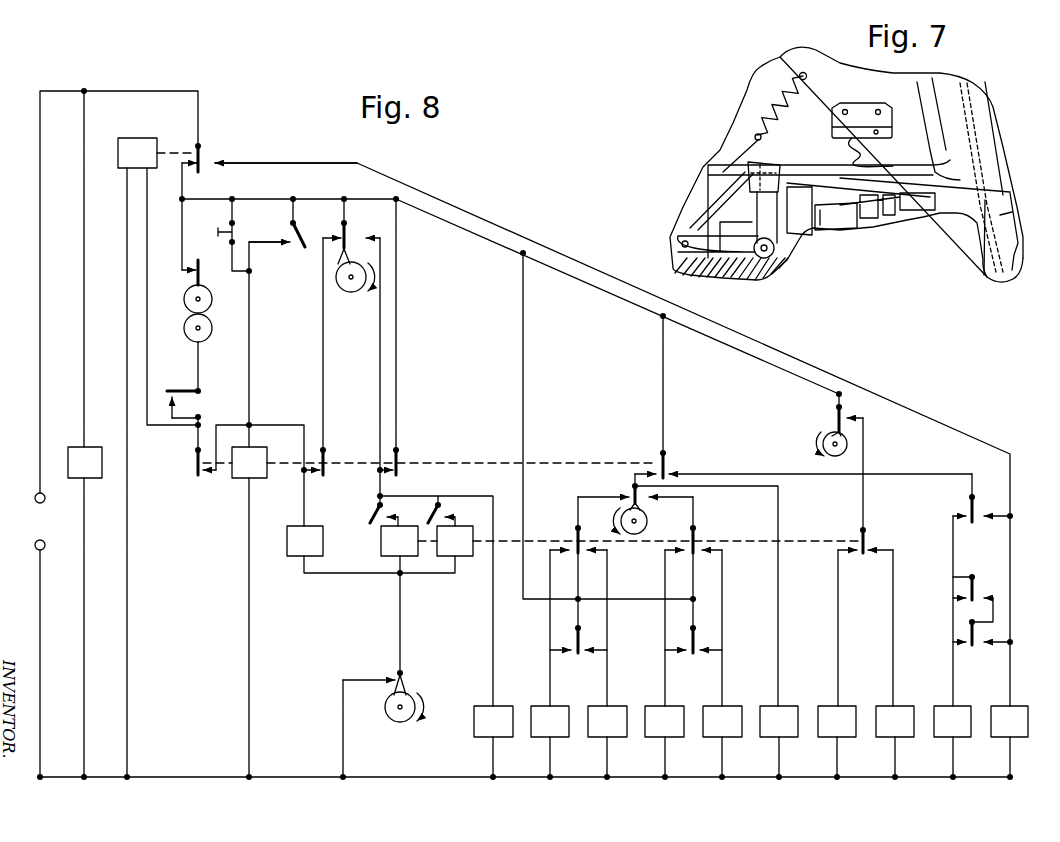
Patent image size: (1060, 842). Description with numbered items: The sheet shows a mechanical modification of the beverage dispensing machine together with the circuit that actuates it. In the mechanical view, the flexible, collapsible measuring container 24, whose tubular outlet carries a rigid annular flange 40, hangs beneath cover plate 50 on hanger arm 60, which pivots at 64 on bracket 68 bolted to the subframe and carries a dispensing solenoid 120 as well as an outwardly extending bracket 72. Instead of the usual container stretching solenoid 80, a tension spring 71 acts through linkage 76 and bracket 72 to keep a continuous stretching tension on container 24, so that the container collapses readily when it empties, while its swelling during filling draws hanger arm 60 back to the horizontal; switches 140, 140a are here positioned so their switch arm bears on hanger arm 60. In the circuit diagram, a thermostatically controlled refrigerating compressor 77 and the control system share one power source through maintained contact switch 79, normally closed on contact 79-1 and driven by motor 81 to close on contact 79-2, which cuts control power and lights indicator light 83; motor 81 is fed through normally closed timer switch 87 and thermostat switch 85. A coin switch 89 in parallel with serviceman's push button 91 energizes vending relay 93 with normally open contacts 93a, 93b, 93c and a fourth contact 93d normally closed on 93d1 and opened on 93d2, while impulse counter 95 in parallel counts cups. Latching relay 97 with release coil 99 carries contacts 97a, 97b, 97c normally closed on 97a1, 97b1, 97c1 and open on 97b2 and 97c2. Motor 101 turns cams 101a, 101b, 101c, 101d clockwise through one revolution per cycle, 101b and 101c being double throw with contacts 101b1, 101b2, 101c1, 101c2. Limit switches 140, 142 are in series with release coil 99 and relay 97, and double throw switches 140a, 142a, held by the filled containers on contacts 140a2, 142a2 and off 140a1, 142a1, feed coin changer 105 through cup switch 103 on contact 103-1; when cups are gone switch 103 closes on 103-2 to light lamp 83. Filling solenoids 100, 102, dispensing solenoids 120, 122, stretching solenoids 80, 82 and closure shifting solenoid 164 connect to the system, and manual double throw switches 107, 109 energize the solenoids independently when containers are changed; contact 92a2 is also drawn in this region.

In FIG. 7, the flexible, collapsible measuring container 24 is at (983, 157).
In FIG. 7, the annular flange 40 is at (1003, 283).
In FIG. 7, the cover plate 50 is at (1010, 236).
In FIG. 7, the hanger arm 60 is at (907, 185).
In FIG. 7, the pivot 64 is at (775, 251).
In FIG. 7, the bracket 68 is at (769, 166).
In FIG. 7, the tension spring 71 is at (778, 97).
In FIG. 7, the bracket 72 is at (720, 256).
In FIG. 7, the linkage 76 is at (690, 223).
In FIG. 8, the refrigerating compressor 77 is at (85, 462).
In FIG. 8, the maintained contact switch 79 is at (203, 153).
In FIG. 8, the contact 79-1 is at (184, 167).
In FIG. 8, the contact 79-2 is at (226, 161).
In FIG. 8, the container stretching solenoid 80 is at (837, 741).
In FIG. 8, the motor 81 is at (137, 153).
In FIG. 8, the container stretching solenoid 82 is at (895, 741).
In FIG. 8, the indicator light 83 is at (1009, 741).
In FIG. 8, the thermostat switch 85 is at (194, 277).
In FIG. 8, the timer switch 87 is at (195, 400).
In FIG. 8, the coin switch 89 is at (299, 235).
In FIG. 8, the push button 91 is at (218, 230).
In FIG. 8, the vending relay 93 is at (249, 462).
In FIG. 8, the relay contact 93a is at (198, 451).
In FIG. 8, the relay contact 93b is at (325, 449).
In FIG. 8, the relay contact 93c is at (398, 449).
In FIG. 8, the relay contact 93d is at (666, 451).
In FIG. 8, the contact 93d1 is at (674, 472).
In FIG. 8, the contact 93d2 is at (639, 468).
In FIG. 8, the impulse counter 95 is at (305, 541).
In FIG. 8, the latching relay 97 is at (455, 541).
In FIG. 8, the relay contact 97a is at (576, 526).
In FIG. 8, the contact 97a1 is at (592, 553).
In FIG. 8, the relay contact 97b is at (697, 529).
In FIG. 8, the contact 97b1 is at (709, 549).
In FIG. 8, the contact 97b2 is at (669, 553).
In FIG. 8, the relay contact 97c is at (867, 528).
In FIG. 8, the contact 97c1 is at (872, 551).
In FIG. 8, the contact 97c2 is at (841, 554).
In FIG. 8, the release coil 99 is at (399, 541).
In FIG. 8, the contact actuator 92a2 is at (555, 548).
In FIG. 8, the filling solenoid 100 is at (550, 741).
In FIG. 8, the motor 101 is at (493, 741).
In FIG. 8, the cam 101a is at (395, 711).
In FIG. 8, the cam 101b is at (641, 527).
In FIG. 8, the contact 101b1 is at (625, 495).
In FIG. 8, the contact 101b2 is at (665, 498).
In FIG. 8, the cam 101c is at (351, 287).
In FIG. 8, the contact 101c1 is at (322, 325).
In FIG. 8, the contact 101c2 is at (369, 232).
In FIG. 8, the cam 101d is at (826, 442).
In FIG. 8, the filling solenoid 102 is at (607, 741).
In FIG. 8, the empty cup switch 103 is at (974, 496).
In FIG. 8, the contact 103-1 is at (958, 513).
In FIG. 8, the contact 103-2 is at (996, 514).
In FIG. 8, the coin changer 105 is at (952, 741).
In FIG. 8, the manually actuated double throw switch 107 is at (573, 640).
In FIG. 8, the manually actuated double throw switch 109 is at (688, 640).
In FIG. 8, the dispensing solenoid 120 is at (664, 741).
In FIG. 7, the dispensing solenoid 120 is at (838, 222).
In FIG. 8, the dispensing solenoid 122 is at (722, 741).
In FIG. 8, the limit switch 140 is at (375, 515).
In FIG. 7, the limit switch 140 is at (872, 124).
In FIG. 8, the double throw limit switch 140a is at (1004, 563).
In FIG. 7, the double throw limit switch 140a is at (862, 116).
In FIG. 8, the contact 140a1 is at (994, 597).
In FIG. 8, the contact 140a2 is at (961, 596).
In FIG. 8, the limit switch 142 is at (432, 515).
In FIG. 8, the double throw limit switch 142a is at (968, 630).
In FIG. 8, the contact 142a1 is at (997, 640).
In FIG. 8, the contact 142a2 is at (962, 643).
In FIG. 8, the closure shifting solenoid 164 is at (779, 741).